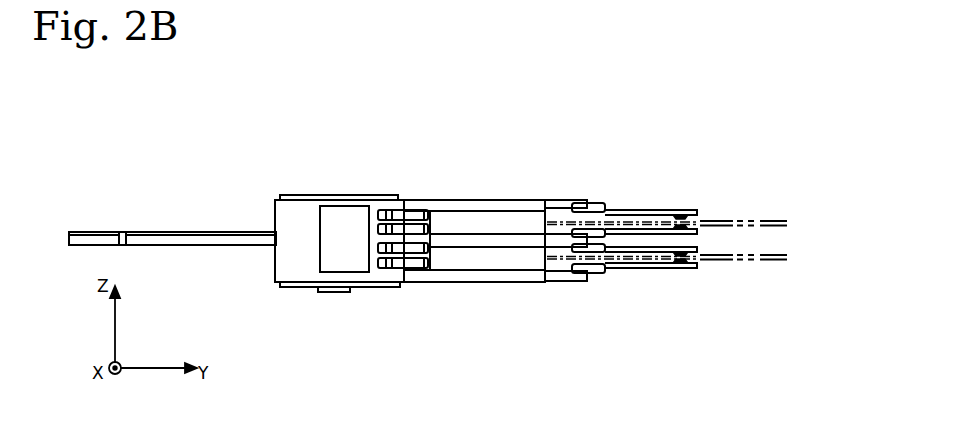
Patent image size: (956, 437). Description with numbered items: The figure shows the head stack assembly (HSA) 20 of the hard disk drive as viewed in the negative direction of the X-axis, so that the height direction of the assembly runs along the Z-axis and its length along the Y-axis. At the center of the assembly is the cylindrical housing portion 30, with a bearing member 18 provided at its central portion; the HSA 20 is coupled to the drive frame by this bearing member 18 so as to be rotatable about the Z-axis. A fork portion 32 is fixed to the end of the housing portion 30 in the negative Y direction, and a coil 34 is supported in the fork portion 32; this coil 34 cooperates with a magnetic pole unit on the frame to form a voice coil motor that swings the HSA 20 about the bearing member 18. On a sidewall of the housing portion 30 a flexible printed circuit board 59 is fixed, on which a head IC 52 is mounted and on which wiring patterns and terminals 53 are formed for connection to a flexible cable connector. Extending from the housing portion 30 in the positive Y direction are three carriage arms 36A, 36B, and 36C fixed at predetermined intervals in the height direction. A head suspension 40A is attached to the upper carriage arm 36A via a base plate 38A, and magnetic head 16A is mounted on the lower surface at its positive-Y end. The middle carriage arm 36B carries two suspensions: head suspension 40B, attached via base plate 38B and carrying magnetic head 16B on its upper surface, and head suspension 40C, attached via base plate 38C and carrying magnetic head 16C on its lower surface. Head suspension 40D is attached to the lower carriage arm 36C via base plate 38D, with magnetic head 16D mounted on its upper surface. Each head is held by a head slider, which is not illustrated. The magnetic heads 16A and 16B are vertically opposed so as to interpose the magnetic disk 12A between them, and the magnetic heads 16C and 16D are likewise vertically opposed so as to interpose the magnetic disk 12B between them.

The head stack assembly 20 is at (202, 165).
The coil 34 is at (107, 232).
The fork portion 32 is at (198, 232).
The housing portion 30 is at (303, 287).
The flexible printed circuit board 59 is at (295, 205).
The bearing member 18 is at (342, 292).
The head IC 52 is at (348, 210).
The terminals 53 is at (396, 212).
The carriage arm 36A is at (444, 203).
The carriage arm 36B is at (486, 236).
The carriage arm 36C is at (450, 283).
The base plate 38A is at (598, 204).
The base plate 38B is at (572, 230).
The base plate 38C is at (567, 279).
The base plate 38D is at (597, 274).
The head suspension 40A is at (664, 211).
The head suspension 40B is at (634, 230).
The head suspension 40C is at (634, 249).
The head suspension 40D is at (662, 269).
The magnetic head 16A is at (684, 214).
The magnetic head 16B is at (682, 228).
The magnetic head 16C is at (684, 257).
The magnetic head 16D is at (680, 264).
The magnetic disk 12A is at (770, 220).
The magnetic disk 12B is at (770, 261).